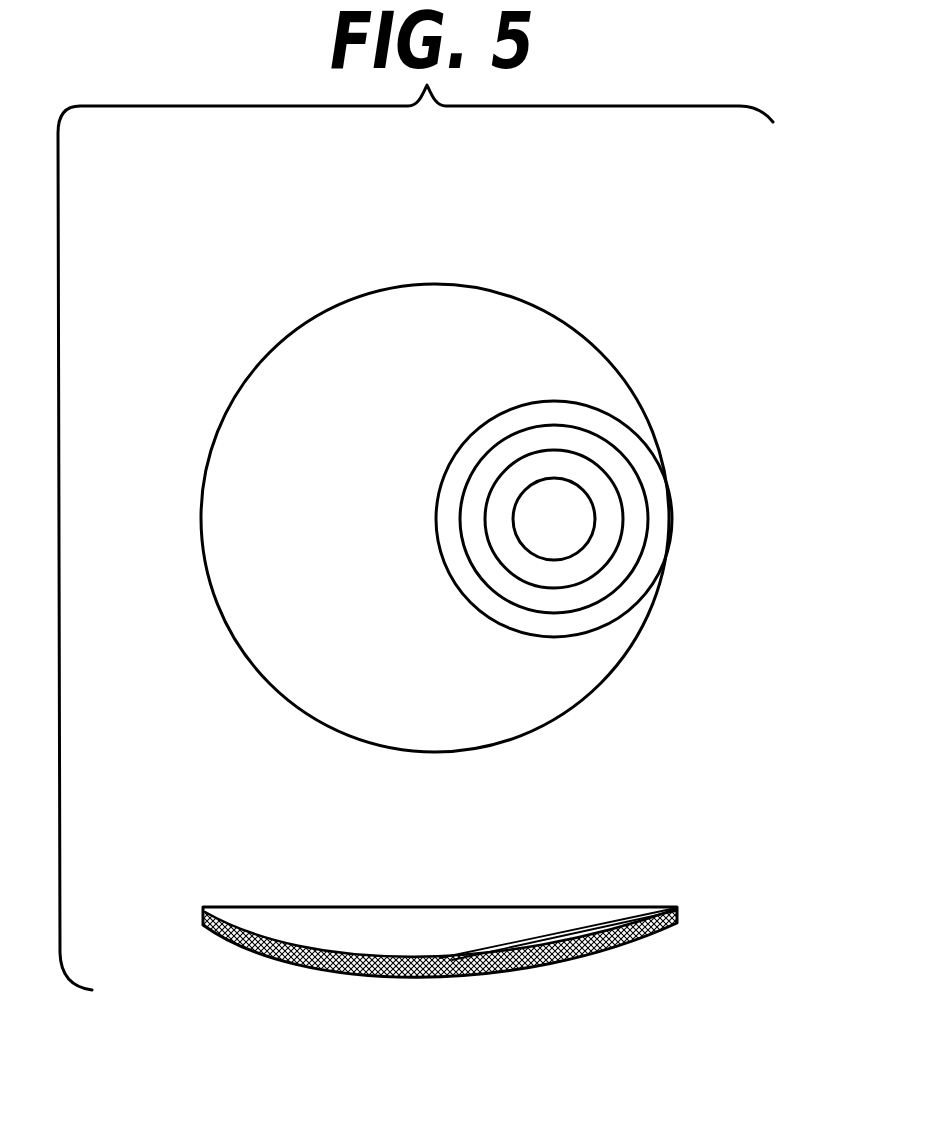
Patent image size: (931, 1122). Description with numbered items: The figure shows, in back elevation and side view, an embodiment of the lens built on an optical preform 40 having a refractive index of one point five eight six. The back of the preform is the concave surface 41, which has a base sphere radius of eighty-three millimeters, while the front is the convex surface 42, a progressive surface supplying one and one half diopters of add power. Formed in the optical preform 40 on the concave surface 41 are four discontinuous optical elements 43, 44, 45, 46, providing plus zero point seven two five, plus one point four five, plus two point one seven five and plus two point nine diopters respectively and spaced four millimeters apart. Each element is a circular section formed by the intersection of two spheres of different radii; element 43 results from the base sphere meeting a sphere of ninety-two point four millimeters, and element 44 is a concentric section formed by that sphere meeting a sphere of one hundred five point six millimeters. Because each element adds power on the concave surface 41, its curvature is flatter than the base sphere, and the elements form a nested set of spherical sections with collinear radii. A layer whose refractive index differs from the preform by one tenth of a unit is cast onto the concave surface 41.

The optical preform 40 is at (255, 668).
The concave surface 41 is at (367, 452).
The convex surface 42 is at (562, 968).
The optical element 43 is at (658, 493).
The optical element 44 is at (630, 555).
The optical element 45 is at (587, 565).
The optical element 46 is at (553, 545).